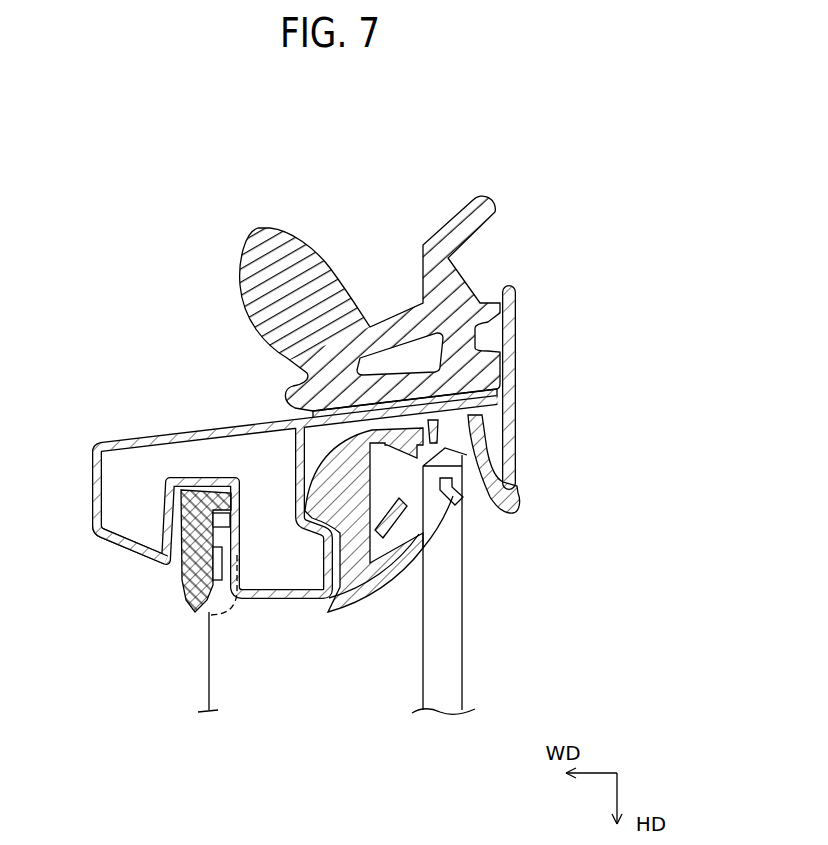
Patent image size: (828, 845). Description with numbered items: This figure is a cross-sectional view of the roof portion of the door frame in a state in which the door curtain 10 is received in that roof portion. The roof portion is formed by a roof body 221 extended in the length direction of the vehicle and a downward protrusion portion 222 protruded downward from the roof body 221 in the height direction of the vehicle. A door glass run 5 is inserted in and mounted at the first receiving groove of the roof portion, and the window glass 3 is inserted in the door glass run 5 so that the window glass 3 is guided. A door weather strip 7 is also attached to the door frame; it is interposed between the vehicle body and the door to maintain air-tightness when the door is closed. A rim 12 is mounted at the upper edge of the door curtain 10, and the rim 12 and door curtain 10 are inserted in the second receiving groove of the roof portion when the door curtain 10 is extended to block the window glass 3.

The door weather strip 7 is at (298, 240).
The roof body 221 is at (152, 437).
The downward protrusion portion 222 is at (118, 548).
The rim 12 is at (183, 596).
The door curtain 10 is at (212, 660).
The window glass 3 is at (452, 640).
The door glass run 5 is at (512, 512).